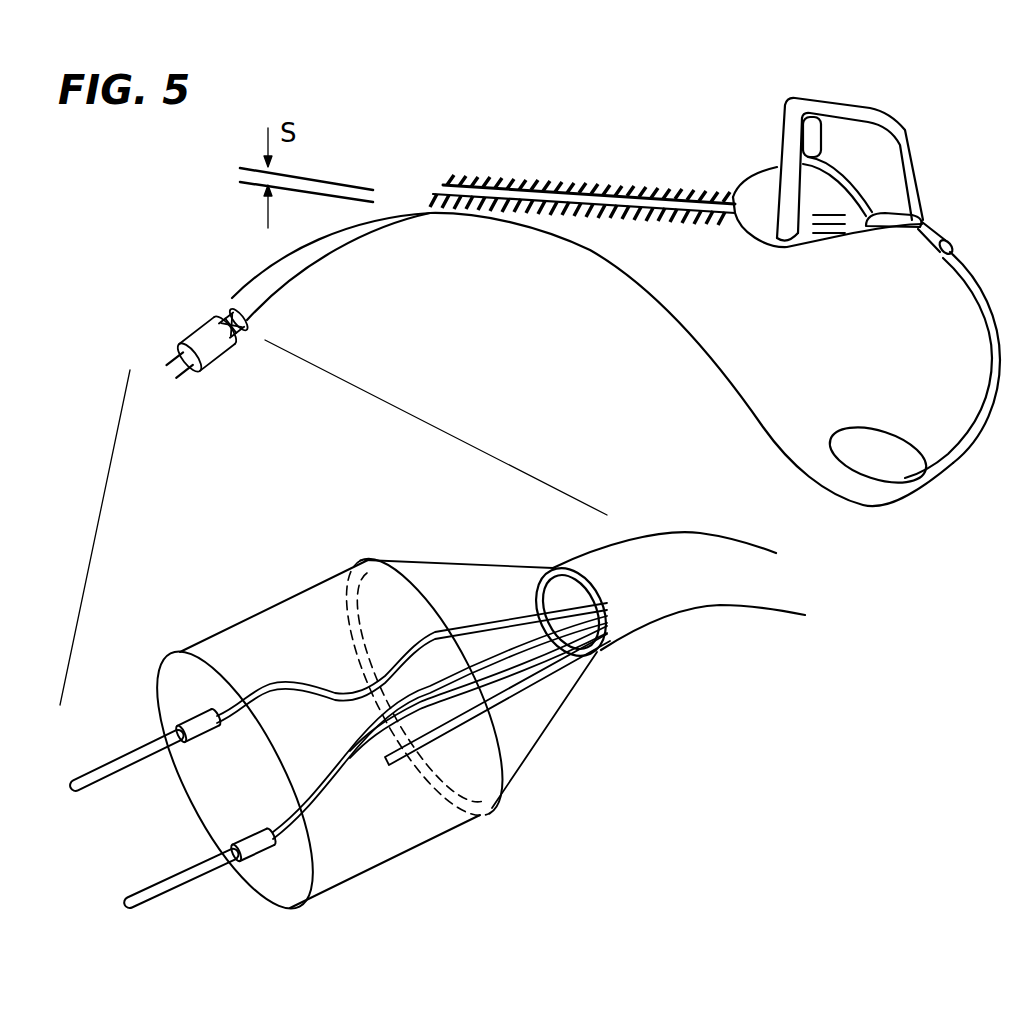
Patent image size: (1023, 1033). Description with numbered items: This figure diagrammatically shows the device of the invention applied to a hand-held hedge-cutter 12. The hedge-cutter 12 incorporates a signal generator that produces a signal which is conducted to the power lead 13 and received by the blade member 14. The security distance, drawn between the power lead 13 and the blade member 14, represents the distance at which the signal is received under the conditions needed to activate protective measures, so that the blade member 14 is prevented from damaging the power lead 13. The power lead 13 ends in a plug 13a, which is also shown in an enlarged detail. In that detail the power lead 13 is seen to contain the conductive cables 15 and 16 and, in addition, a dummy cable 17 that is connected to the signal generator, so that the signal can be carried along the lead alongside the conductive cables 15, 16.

The hedge-cutter 12 is at (748, 163).
The power lead 13 is at (735, 375).
The plug 13a is at (200, 305).
The blade member 14 is at (478, 177).
The conductive cable 15 is at (167, 358).
The conductive cable 16 is at (185, 362).
The dummy cable 17 is at (235, 345).